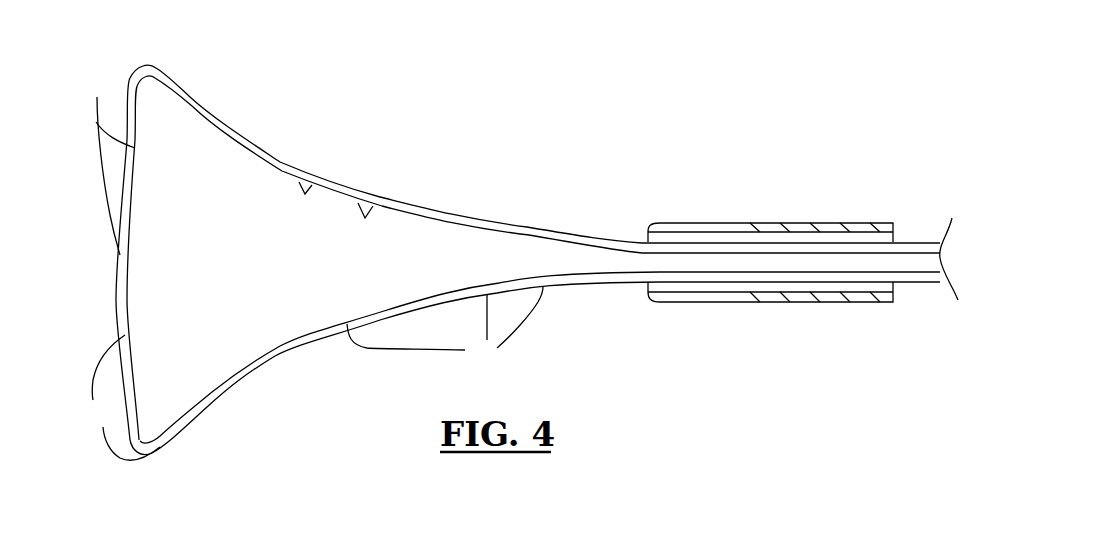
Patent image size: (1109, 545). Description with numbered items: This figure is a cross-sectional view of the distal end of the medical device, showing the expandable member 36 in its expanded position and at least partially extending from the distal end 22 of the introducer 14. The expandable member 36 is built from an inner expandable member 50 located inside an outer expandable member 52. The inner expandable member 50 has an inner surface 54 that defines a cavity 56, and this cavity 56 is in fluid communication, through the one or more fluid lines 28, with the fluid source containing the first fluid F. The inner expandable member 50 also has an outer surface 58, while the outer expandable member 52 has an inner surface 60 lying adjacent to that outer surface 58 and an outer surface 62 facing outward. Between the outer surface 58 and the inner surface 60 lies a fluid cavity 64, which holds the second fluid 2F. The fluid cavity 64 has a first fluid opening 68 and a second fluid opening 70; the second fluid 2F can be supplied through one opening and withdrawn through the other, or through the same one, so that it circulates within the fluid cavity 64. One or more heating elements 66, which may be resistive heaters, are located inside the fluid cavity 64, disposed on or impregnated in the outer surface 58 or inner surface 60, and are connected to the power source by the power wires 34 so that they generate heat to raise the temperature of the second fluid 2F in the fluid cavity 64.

The introducer 14 is at (882, 228).
The distal end 22 is at (731, 222).
The fluid lines 28 is at (730, 265).
The power wires 34 is at (637, 244).
The expandable member 36 is at (352, 70).
The inner expandable member 50 is at (412, 223).
The outer expandable member 52 is at (212, 103).
The inner surface 54 is at (370, 212).
The cavity 56 is at (238, 255).
The outer surface 58 is at (341, 188).
The inner surface 60 is at (303, 183).
The outer surface 62 is at (255, 147).
The fluid cavity 64 is at (523, 218).
The heating elements 66 is at (135, 93).
The first fluid opening 68 is at (833, 250).
The second fluid opening 70 is at (833, 277).
The second fluid 2F is at (123, 273).
The first fluid F is at (332, 285).